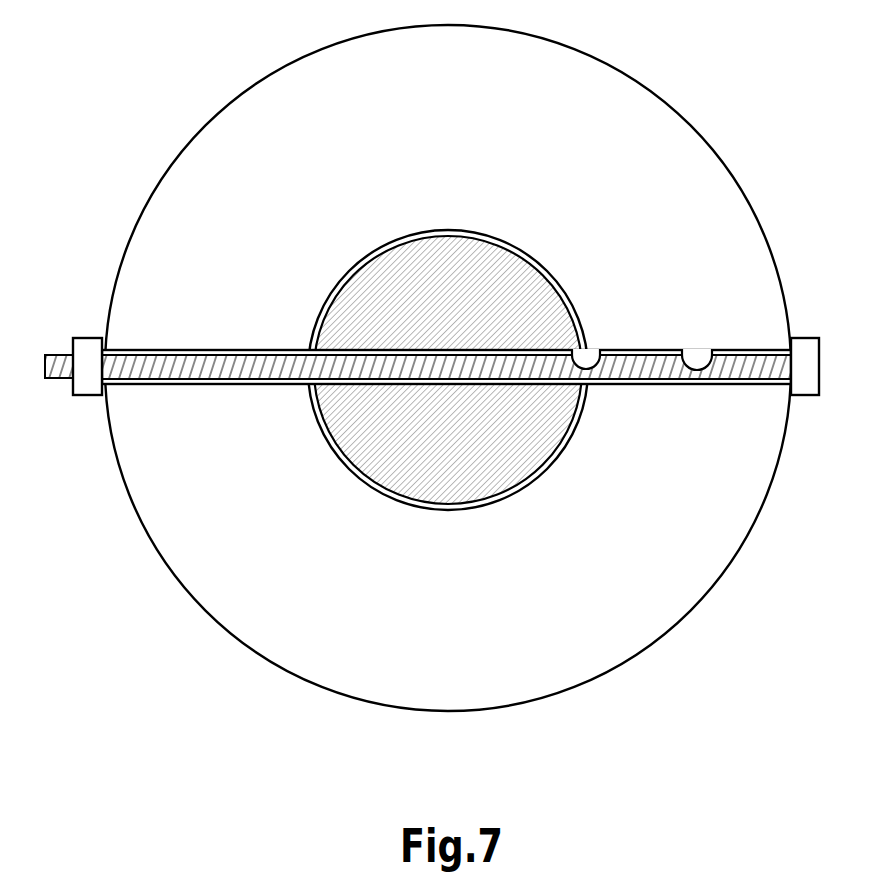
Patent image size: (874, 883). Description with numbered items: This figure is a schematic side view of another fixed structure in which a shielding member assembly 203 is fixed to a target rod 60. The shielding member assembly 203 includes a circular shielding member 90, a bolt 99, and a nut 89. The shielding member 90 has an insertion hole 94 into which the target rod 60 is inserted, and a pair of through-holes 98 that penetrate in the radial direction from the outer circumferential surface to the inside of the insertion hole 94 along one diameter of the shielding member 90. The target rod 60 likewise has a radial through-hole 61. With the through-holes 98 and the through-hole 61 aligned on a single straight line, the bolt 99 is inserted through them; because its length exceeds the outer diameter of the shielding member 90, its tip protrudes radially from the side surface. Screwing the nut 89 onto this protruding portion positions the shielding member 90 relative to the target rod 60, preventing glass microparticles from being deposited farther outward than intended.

The shielding member assembly 203 is at (178, 68).
The shielding member 90 is at (660, 100).
The target rod 60 is at (443, 231).
The insertion hole 94 is at (350, 470).
The through-hole 61 is at (593, 351).
The through-hole 98 is at (703, 351).
The nut 89 is at (85, 398).
The bolt 99 is at (805, 398).